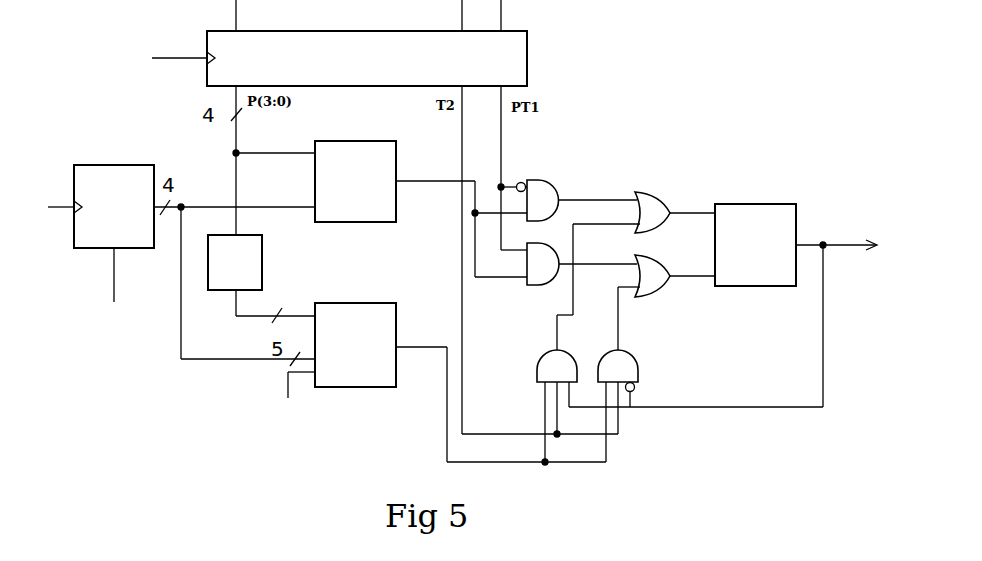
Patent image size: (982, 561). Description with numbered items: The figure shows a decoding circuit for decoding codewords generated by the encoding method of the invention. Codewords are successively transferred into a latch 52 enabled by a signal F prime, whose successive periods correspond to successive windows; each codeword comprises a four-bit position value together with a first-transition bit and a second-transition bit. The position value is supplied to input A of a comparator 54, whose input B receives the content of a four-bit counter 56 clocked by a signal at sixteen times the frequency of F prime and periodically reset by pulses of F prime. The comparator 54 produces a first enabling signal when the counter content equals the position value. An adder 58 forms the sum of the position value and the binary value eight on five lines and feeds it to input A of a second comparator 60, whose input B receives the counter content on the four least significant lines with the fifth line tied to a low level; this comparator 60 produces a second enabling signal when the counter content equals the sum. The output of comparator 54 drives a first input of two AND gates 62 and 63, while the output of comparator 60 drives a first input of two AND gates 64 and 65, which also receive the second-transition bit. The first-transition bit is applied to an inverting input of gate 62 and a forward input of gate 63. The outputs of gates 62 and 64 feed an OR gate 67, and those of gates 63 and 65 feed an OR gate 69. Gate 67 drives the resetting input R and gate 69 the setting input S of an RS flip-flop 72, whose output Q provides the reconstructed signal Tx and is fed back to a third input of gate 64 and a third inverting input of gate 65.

The latch 52 is at (522, 63).
The comparator 54 is at (373, 222).
The 4-bit counter 56 is at (131, 165).
The adder 58 is at (258, 262).
The comparator 60 is at (366, 387).
The AND gate 62 is at (548, 196).
The AND gate 63 is at (527, 287).
The AND gate 64 is at (545, 365).
The AND gate 65 is at (640, 366).
The OR gate 67 is at (652, 206).
The OR gate 69 is at (650, 286).
The RS flip-flop 72 is at (775, 218).